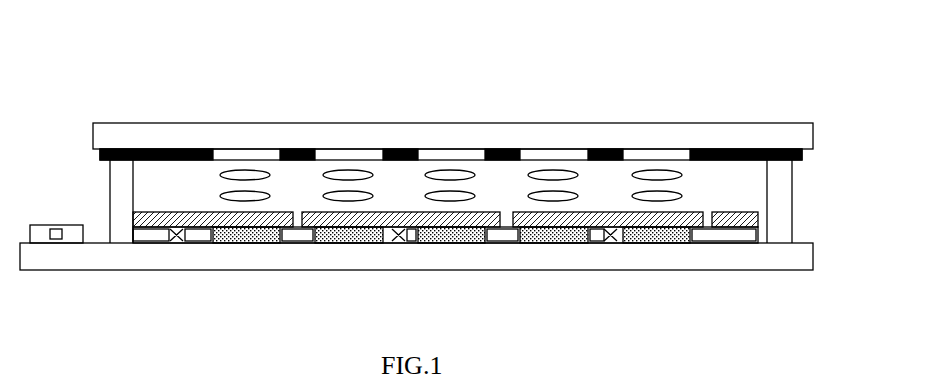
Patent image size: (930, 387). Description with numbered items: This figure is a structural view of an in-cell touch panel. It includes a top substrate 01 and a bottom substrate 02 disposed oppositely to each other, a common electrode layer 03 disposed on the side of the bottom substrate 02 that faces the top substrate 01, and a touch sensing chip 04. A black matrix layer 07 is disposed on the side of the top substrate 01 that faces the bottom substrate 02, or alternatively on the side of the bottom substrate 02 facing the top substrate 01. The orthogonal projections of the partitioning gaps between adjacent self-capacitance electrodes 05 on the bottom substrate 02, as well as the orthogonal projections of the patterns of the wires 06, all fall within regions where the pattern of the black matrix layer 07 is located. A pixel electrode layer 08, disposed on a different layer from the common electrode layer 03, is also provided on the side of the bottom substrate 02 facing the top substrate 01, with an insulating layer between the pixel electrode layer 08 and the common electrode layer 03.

The top substrate 01 is at (453, 106).
The bottom substrate 02 is at (416, 286).
The common electrode layer 03 is at (128, 220).
The touch sensing chip 04 is at (87, 273).
The self-capacitance electrodes 05 is at (464, 269).
The wires 06 is at (393, 276).
The black matrix layer 07 is at (451, 124).
The pixel electrode layer 08 is at (445, 271).